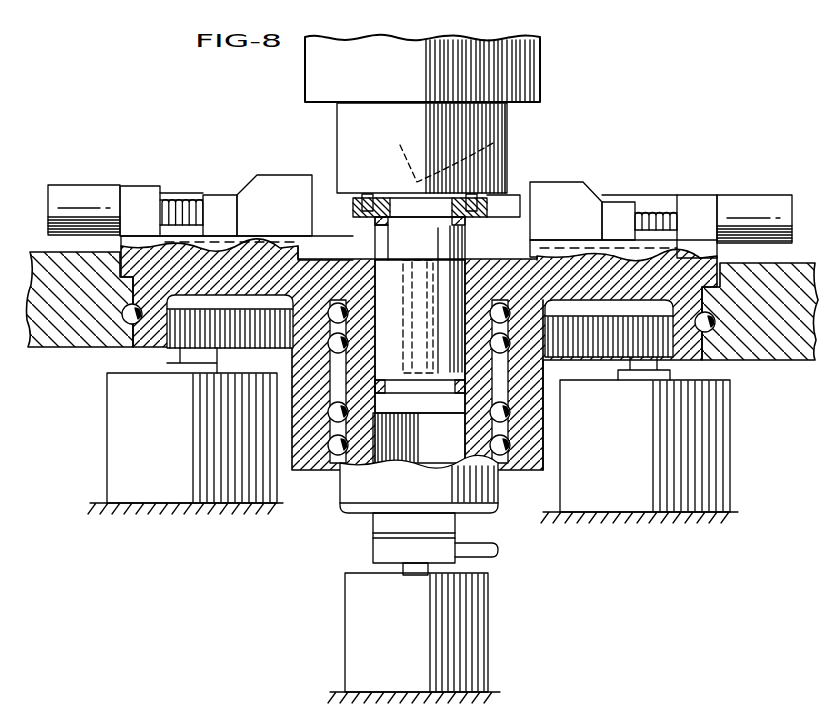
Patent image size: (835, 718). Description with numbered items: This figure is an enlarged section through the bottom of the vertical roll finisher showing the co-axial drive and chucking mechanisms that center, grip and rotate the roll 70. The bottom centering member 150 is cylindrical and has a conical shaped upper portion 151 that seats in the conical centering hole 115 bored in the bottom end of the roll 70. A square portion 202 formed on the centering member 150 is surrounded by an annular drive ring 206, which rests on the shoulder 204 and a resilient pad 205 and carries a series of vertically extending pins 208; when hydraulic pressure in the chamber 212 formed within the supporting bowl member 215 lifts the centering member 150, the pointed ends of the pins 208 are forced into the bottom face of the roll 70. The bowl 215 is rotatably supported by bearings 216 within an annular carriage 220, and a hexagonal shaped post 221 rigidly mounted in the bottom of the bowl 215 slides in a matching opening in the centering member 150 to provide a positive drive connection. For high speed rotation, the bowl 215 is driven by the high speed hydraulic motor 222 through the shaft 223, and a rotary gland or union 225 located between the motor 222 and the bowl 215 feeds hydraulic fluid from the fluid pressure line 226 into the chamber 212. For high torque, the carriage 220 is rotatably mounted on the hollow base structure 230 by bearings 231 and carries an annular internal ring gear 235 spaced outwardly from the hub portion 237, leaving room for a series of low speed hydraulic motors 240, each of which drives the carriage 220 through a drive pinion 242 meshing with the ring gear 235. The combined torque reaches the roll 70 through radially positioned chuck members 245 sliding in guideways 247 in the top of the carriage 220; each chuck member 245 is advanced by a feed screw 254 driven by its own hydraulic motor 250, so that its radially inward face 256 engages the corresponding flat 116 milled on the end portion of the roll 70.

The roll 70 is at (542, 68).
The flats 116 is at (337, 135).
The centering holes 115 is at (505, 134).
The conical shaped upper portion 151 is at (435, 153).
The square portion 202 is at (410, 207).
The pins 208 is at (361, 200).
The annular drive ring 206 is at (480, 212).
The radially inward face 256 is at (520, 198).
The shoulder 204 is at (381, 223).
The bottom centering member 150 is at (447, 243).
The resilient pad 205 is at (377, 222).
The chamber 212 is at (450, 456).
The bearings 216 is at (328, 432).
The hollow base structure 230 is at (55, 350).
The bearings 231 is at (126, 325).
The drive pinion 242 is at (197, 360).
The annular internal ring gear 235 is at (560, 350).
The hub portion 237 is at (537, 417).
The low speed hydraulic motors 240 is at (118, 465).
The hydraulic motors 250 is at (72, 193).
The feed screw 254 is at (180, 202).
The chuck members 245 is at (270, 183).
The guideways 247 is at (270, 237).
The annular carriage 220 is at (700, 195).
The hexagonal shaped post 221 is at (417, 457).
The supporting bowl member 215 is at (370, 495).
The rotary gland or union 225 is at (375, 543).
The fluid pressure line 226 is at (490, 552).
The shaft 223 is at (415, 574).
The high speed hydraulic motor 222 is at (488, 648).